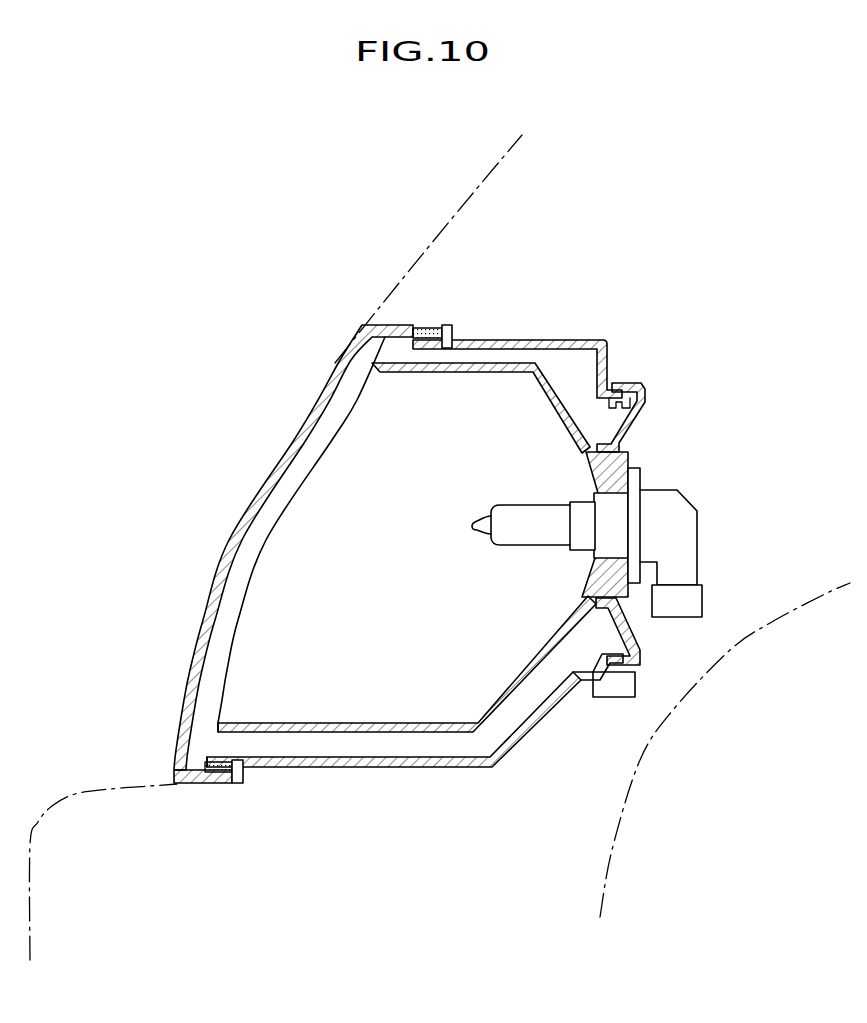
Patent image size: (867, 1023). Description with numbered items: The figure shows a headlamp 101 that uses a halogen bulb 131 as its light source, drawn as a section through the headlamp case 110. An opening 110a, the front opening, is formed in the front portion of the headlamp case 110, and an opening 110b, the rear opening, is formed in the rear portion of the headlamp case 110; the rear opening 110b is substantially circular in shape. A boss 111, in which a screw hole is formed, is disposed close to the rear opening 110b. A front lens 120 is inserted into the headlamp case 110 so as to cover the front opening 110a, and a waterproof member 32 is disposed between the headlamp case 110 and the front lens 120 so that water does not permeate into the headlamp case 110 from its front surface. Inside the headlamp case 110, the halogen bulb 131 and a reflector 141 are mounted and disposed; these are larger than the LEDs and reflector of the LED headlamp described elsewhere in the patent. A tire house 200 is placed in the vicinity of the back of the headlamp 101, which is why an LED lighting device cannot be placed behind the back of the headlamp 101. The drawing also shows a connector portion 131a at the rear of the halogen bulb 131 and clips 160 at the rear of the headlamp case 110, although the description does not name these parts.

The headlamp 101 is at (233, 385).
The headlamp case 110 is at (565, 340).
The opening (front opening) 110a is at (222, 653).
The opening (rear opening) 110b is at (603, 633).
The boss 111 is at (600, 698).
The front lens 120 is at (335, 353).
The halogen bulb 131 is at (513, 548).
The bulb connector 131a is at (704, 600).
The reflector 141 is at (260, 550).
The clip 160 is at (648, 412).
The waterproof member 32 is at (448, 325).
The tire house 200 is at (793, 608).